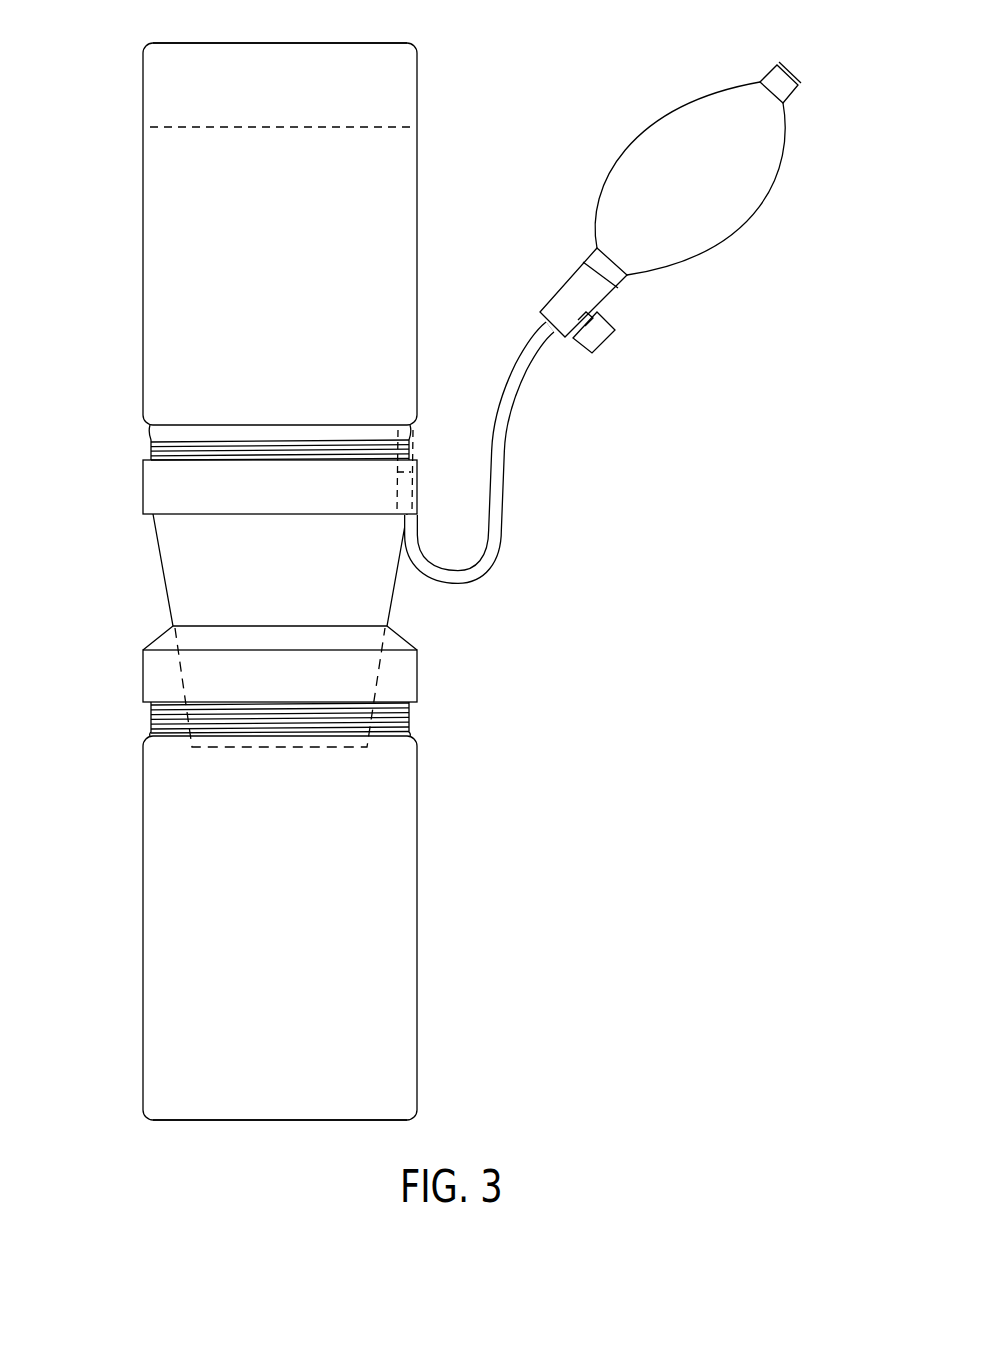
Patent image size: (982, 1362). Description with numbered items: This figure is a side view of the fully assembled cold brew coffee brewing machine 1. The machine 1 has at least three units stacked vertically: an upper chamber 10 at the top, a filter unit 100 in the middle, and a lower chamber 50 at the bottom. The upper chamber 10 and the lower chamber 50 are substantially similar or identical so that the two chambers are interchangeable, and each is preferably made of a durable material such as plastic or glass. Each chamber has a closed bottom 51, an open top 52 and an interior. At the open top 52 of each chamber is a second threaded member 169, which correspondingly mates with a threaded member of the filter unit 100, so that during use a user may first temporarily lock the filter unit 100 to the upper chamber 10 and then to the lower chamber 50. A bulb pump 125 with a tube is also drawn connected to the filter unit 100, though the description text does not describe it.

The cold brew coffee brewing machine 1 is at (435, 585).
The upper chamber 10 is at (163, 270).
The lower chamber 50 is at (163, 918).
The closed bottom 51 is at (217, 43).
The open top 52 is at (150, 447).
The filter unit 100 is at (120, 457).
The bulb pump 125 is at (730, 208).
The second threaded member 169 is at (412, 455).